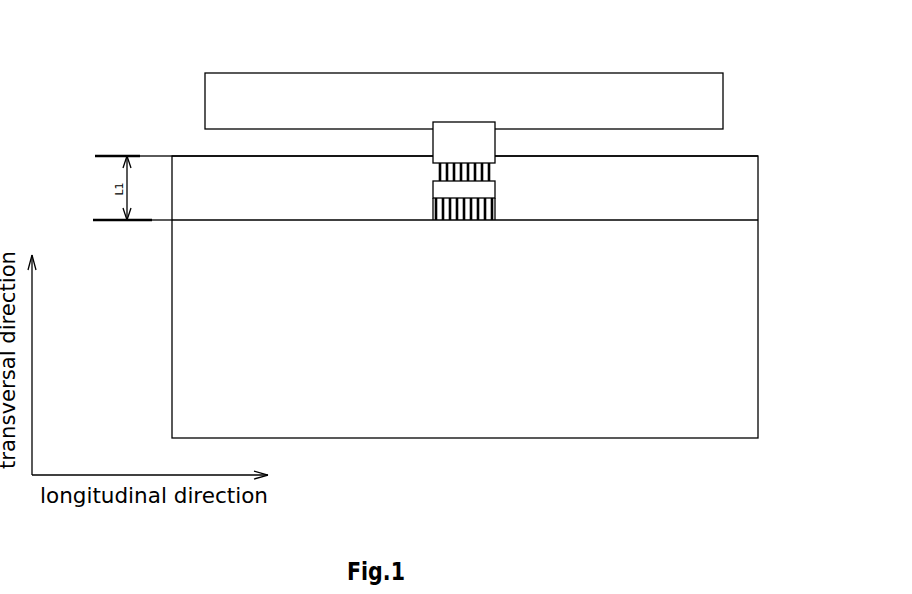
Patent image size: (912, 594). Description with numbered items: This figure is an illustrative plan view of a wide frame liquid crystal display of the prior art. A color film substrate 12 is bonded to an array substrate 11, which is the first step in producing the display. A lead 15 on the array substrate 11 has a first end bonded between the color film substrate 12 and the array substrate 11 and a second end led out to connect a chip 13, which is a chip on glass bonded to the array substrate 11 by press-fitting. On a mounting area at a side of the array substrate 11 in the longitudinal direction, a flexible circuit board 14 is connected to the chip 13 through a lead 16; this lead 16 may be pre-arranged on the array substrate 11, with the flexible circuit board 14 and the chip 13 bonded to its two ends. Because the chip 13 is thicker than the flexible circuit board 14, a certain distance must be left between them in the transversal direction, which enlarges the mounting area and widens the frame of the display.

The array substrate 11 is at (727, 195).
The color film substrate 12 is at (717, 362).
The chip 13 is at (483, 190).
The flexible circuit board 14 is at (455, 138).
The lead 15 is at (495, 220).
The lead 16 is at (440, 170).